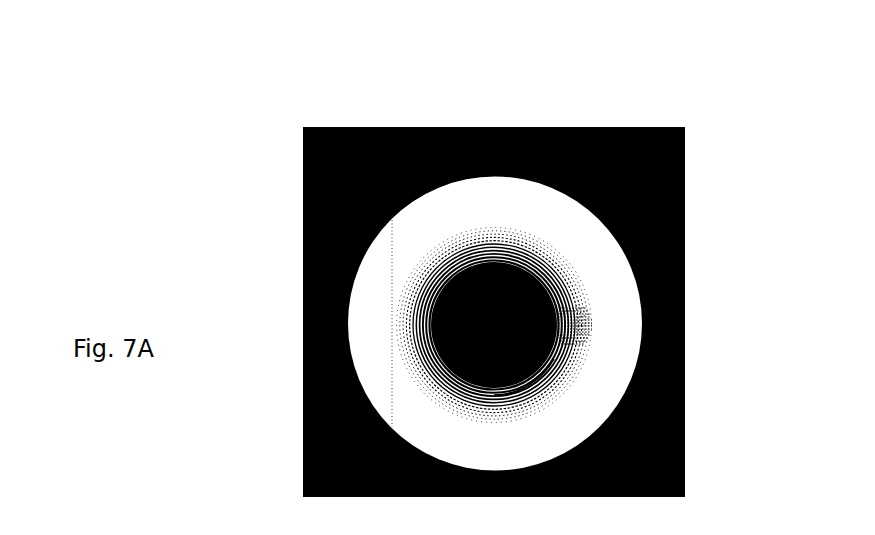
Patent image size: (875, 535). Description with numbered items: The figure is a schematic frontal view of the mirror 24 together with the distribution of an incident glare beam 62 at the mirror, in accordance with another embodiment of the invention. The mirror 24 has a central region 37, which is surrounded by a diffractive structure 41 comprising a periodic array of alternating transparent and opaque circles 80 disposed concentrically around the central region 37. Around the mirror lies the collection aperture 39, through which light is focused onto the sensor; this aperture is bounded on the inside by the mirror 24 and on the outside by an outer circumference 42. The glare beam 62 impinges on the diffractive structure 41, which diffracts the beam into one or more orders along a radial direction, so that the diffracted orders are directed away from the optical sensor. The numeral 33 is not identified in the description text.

The alternating transparent and opaque circles 80 is at (433, 252).
The mirror 24 is at (537, 242).
The collection aperture 39 is at (588, 250).
The outer circumference 42 is at (627, 250).
The glare beam 62 is at (592, 335).
The diffractive structure 41 is at (568, 373).
The central region 37 is at (485, 327).
The mask pattern 33 is at (460, 331).